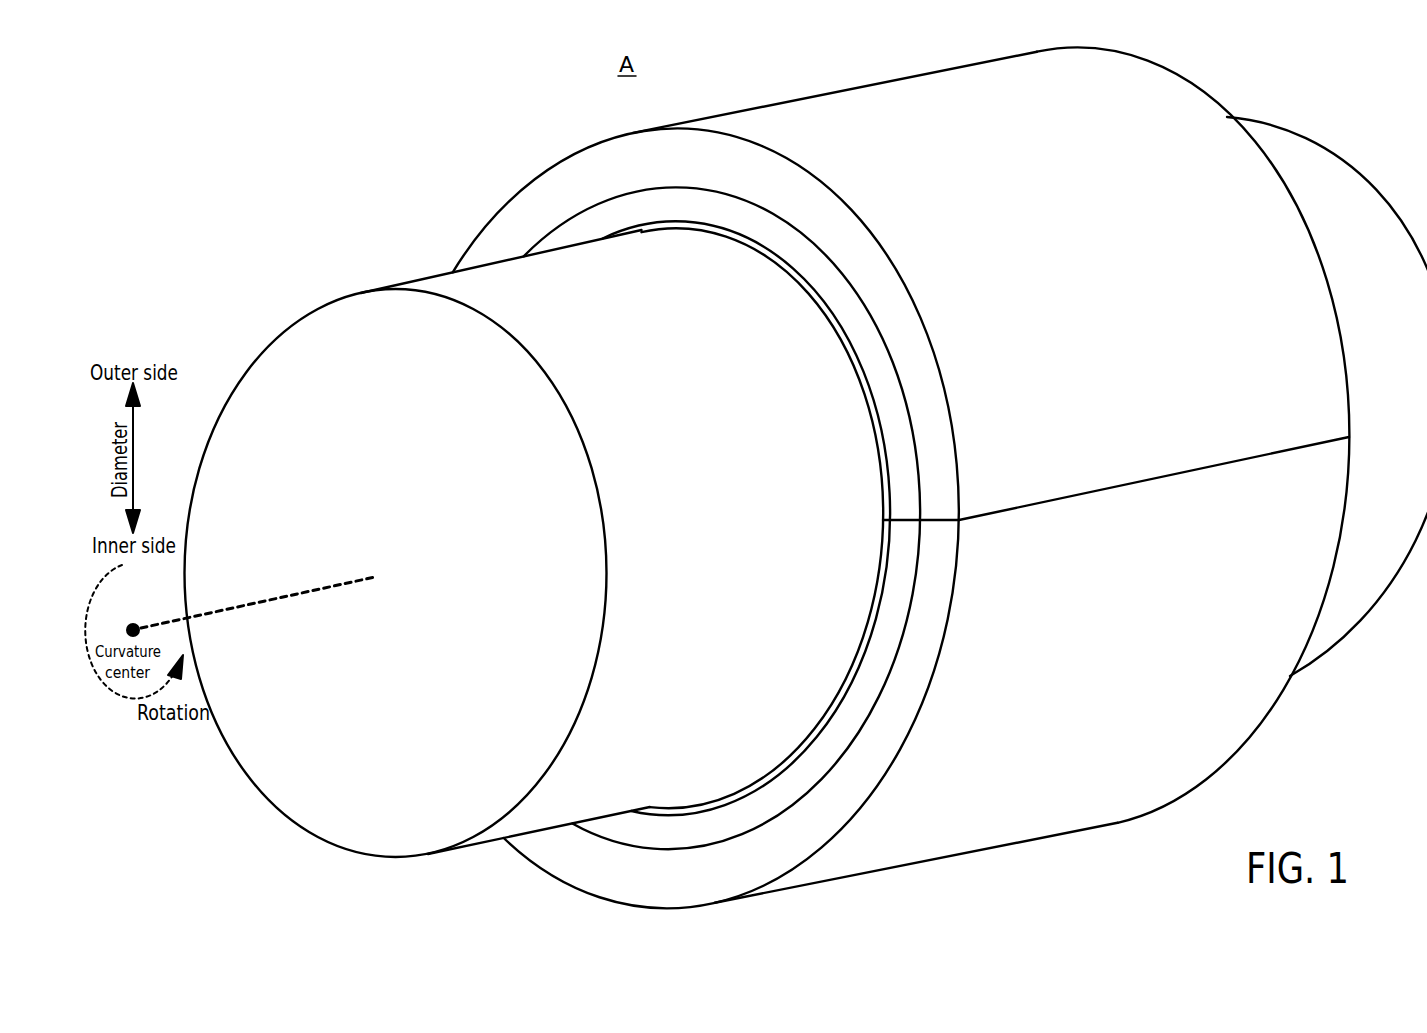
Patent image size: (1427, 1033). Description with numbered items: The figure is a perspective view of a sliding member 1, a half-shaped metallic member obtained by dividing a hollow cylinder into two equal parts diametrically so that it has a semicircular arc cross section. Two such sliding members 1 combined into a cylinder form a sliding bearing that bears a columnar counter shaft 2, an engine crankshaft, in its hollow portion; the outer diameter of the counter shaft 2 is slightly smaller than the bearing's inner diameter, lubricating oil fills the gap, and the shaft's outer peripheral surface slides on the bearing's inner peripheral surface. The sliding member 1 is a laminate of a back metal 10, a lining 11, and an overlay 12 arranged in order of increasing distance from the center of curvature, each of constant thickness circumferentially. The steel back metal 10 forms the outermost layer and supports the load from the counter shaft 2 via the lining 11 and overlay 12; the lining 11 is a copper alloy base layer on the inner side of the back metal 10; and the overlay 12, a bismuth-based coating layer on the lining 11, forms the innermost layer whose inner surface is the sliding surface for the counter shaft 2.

The sliding member 1 is at (791, 99).
The counter shaft 2 is at (308, 315).
The back metal 10 is at (670, 146).
The lining 11 is at (640, 205).
The overlay 12 is at (630, 230).